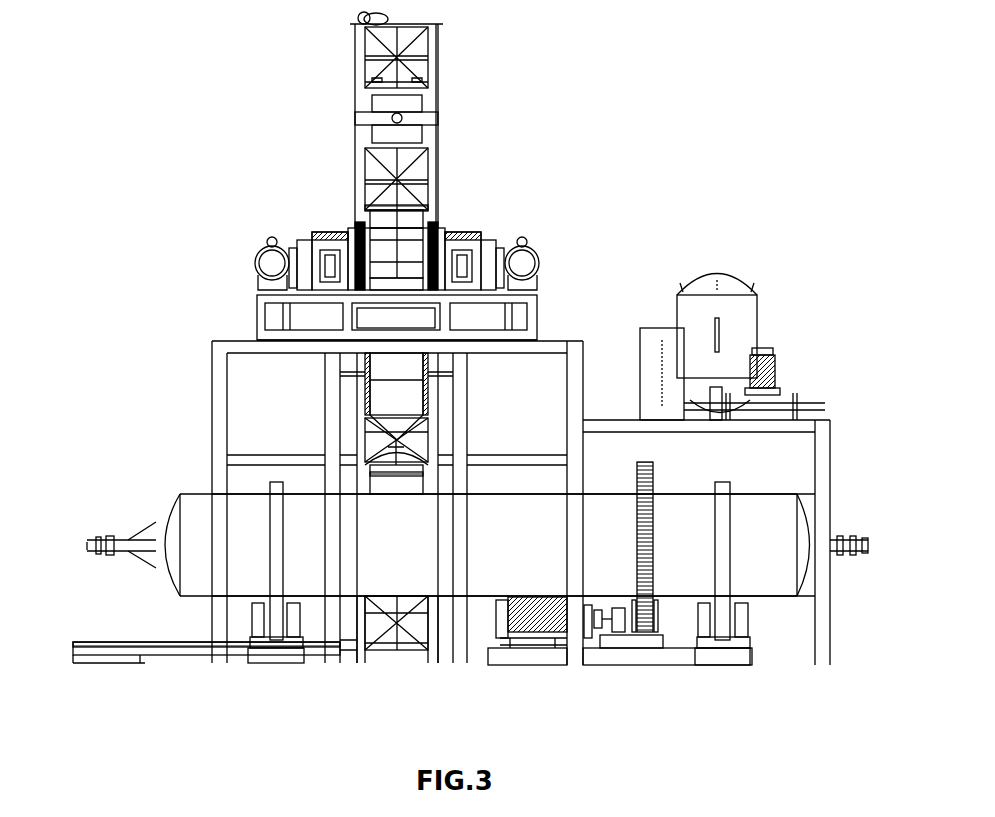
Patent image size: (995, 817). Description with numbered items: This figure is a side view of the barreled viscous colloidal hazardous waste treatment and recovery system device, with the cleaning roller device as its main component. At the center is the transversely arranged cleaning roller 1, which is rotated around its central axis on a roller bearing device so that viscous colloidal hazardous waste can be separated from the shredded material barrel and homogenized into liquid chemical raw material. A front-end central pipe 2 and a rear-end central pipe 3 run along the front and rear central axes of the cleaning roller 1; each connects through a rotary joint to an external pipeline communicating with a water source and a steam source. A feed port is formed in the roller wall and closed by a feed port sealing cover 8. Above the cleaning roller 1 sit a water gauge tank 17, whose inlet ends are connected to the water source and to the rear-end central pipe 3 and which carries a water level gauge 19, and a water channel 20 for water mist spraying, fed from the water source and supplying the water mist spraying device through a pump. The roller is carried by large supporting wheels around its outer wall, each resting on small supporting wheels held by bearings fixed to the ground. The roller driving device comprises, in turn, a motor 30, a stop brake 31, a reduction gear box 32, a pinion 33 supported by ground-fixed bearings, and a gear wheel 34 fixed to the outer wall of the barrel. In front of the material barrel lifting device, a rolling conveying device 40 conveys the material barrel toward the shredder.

The cleaning roller 1 is at (762, 525).
The front-end central pipe 2 is at (130, 543).
The rear-end central pipe 3 is at (839, 538).
The feed port sealing cover 8 is at (365, 462).
The water gauge tank 17 is at (752, 300).
The water level gauge 19 is at (735, 335).
The water channel for water mist spraying 20 is at (660, 352).
The motor 30 is at (500, 648).
The stop brake 31 is at (600, 625).
The reduction gear box 32 is at (618, 632).
The pinion 33 is at (645, 625).
The gear wheel 34 is at (652, 485).
The rolling conveying device 40 is at (122, 642).